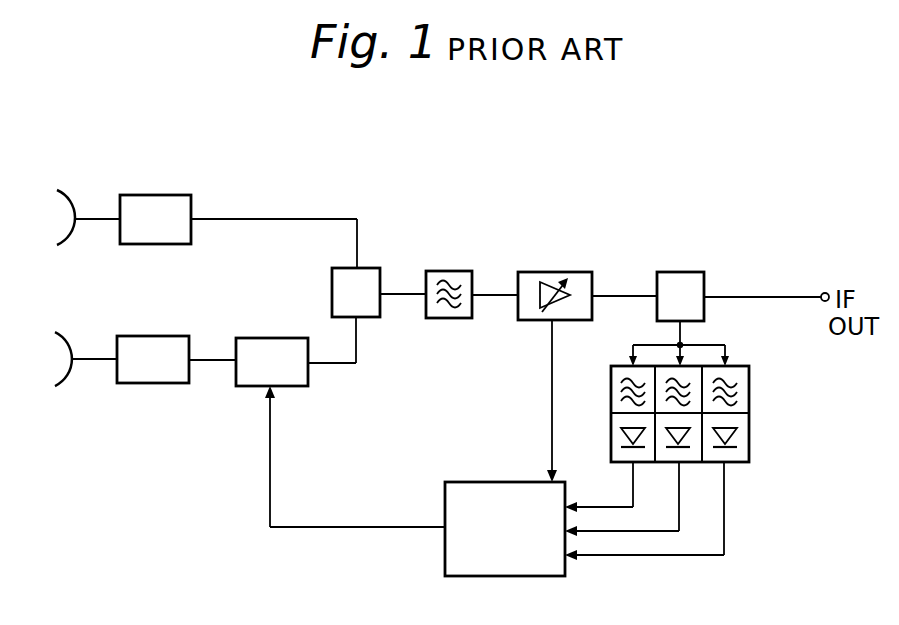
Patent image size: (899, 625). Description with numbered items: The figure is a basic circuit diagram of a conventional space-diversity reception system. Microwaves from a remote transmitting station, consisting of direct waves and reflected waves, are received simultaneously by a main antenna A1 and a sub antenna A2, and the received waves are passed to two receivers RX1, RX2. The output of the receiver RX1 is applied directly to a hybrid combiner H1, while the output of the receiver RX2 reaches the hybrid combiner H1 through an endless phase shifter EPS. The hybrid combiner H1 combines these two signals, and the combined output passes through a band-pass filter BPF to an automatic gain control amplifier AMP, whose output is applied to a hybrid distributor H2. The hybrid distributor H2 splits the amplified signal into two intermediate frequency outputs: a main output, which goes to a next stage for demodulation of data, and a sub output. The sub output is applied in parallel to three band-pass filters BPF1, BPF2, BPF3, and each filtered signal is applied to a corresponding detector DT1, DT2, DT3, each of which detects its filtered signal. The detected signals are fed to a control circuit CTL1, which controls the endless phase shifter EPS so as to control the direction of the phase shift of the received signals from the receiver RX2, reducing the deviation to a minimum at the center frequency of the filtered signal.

The main antenna A1 is at (72, 217).
The sub antenna A2 is at (71, 359).
The receiver RX1 is at (238, 231).
The receiver RX2 is at (176, 359).
The endless phase shifter EPS is at (296, 351).
The hybrid combiner H1 is at (379, 292).
The hybrid distributor H2 is at (725, 319).
The band-pass filter BPF is at (471, 275).
The automatic gain control amplifier AMP is at (587, 358).
The band-pass filter BPF1 is at (597, 391).
The band-pass filter BPF2 is at (695, 378).
The band-pass filter BPF3 is at (763, 391).
The detector DT1 is at (604, 468).
The detector DT2 is at (644, 482).
The detector DT3 is at (682, 492).
The control circuit CTL1 is at (415, 481).